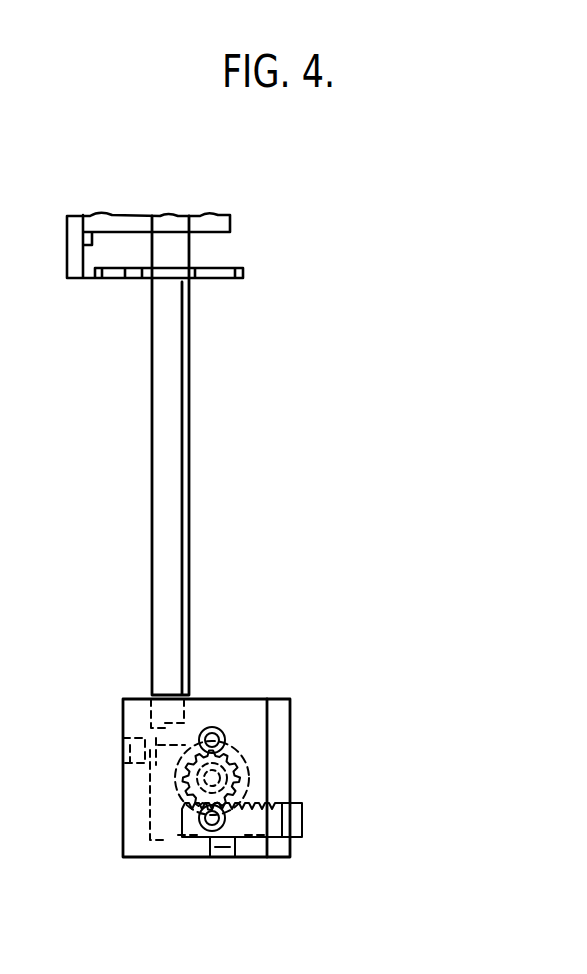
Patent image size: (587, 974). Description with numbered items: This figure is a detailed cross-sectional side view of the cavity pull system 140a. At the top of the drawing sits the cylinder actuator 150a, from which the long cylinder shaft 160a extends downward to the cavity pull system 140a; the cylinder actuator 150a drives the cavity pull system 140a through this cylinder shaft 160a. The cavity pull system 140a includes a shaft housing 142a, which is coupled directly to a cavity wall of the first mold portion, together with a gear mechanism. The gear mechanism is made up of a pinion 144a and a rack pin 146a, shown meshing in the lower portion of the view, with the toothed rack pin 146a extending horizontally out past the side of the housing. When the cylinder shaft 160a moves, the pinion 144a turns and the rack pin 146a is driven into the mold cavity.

The cylinder actuator 150a is at (223, 253).
The cylinder shaft 160a is at (188, 468).
The cavity pull system 140a is at (121, 812).
The shaft housing 142a is at (193, 712).
The pinion 144a is at (247, 768).
The rack pin 146a is at (302, 817).